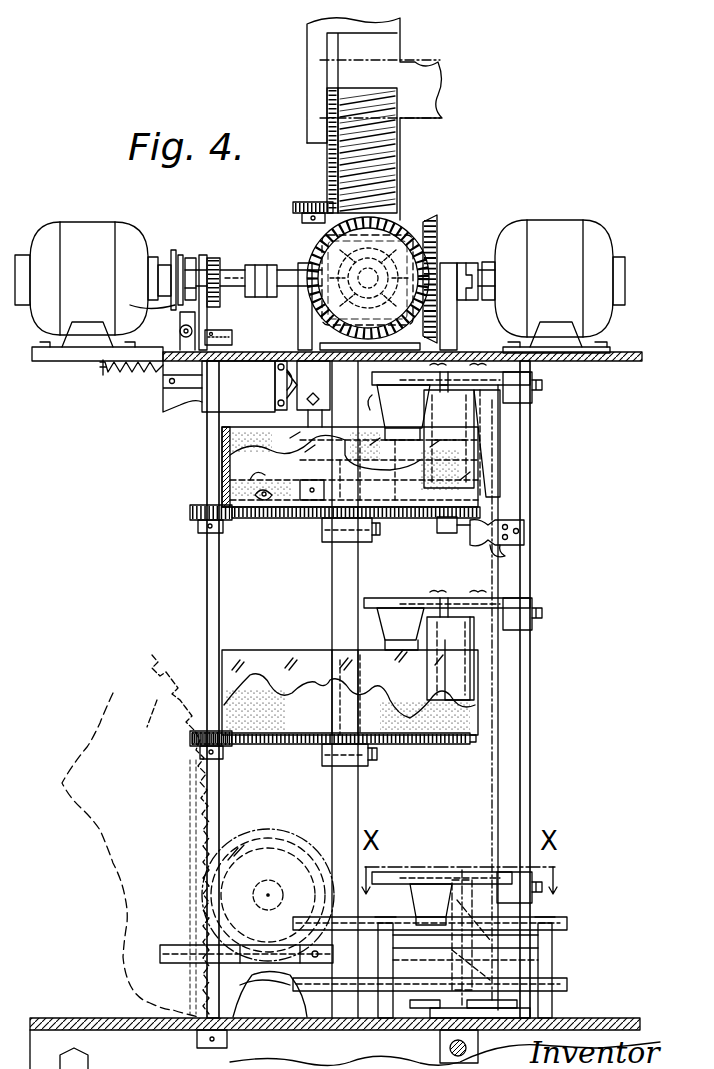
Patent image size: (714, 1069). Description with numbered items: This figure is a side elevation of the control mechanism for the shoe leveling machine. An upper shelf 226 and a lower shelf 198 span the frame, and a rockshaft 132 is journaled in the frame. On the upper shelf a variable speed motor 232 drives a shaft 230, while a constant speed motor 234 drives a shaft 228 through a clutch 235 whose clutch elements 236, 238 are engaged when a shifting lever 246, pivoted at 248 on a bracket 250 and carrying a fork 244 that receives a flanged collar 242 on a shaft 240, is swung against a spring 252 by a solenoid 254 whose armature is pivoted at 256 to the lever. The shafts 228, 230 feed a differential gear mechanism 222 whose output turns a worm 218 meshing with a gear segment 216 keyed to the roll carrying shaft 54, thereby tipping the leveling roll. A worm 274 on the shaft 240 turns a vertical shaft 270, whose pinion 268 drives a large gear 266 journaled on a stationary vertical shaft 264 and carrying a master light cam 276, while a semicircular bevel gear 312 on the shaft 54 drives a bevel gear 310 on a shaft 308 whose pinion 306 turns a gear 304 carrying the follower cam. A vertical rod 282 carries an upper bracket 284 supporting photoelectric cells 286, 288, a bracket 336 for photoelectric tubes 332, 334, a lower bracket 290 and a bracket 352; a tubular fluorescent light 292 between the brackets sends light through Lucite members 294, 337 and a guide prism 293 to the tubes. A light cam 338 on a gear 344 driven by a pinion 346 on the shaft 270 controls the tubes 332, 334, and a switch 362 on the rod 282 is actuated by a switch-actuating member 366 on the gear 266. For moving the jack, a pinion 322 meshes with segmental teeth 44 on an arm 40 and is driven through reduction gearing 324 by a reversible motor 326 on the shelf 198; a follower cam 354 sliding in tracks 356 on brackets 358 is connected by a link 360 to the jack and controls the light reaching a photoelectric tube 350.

The shaft 54 is at (436, 104).
The gear segment 216 is at (400, 144).
The semicircular bevel gear 312 is at (328, 154).
The bevel gear 310 is at (308, 204).
The shaft 308 is at (306, 233).
The differential gear mechanism 222 is at (402, 242).
The shaft 230 is at (452, 268).
The worm 218 is at (440, 320).
The shaft 228 is at (300, 270).
The variable speed motor 232 is at (555, 222).
The constant speed motor 234 is at (74, 232).
The clutch element 236 is at (172, 260).
The clutch element 238 is at (180, 252).
The clutch 235 is at (180, 248).
The bracket 250 is at (222, 262).
The flanged collar 242 is at (212, 258).
The shaft 240 is at (255, 260).
The fork 244 is at (173, 310).
The shifting lever 246 is at (186, 338).
The worm 274 is at (218, 306).
The pivot 248 is at (230, 337).
The bracket 284 is at (462, 366).
The upper shelf 226 is at (582, 365).
The spring 252 is at (160, 392).
The pivot 256 is at (200, 408).
The solenoid 254 is at (218, 412).
The vertical shaft 270 is at (212, 580).
The vertical stationary shaft 264 is at (353, 572).
The vertical rod 282 is at (530, 778).
The tubular fluorescent light 292 is at (500, 757).
The photoelectric cell 286 is at (399, 411).
The photoelectric cell 288 is at (490, 436).
The Lucite member 294 is at (462, 408).
The master light cam 276 is at (225, 465).
The gear 304 is at (252, 520).
The pinion 306 is at (298, 520).
The large gear 266 is at (482, 515).
The pinion 268 is at (205, 520).
The switch-actuating member 366 is at (447, 531).
The switch 362 is at (508, 556).
The bracket 336 is at (440, 583).
The photoelectric tube 334 is at (425, 656).
The Lucite member 337 is at (476, 706).
The light cam 338 is at (252, 650).
The photoelectric tube 332 is at (378, 648).
The gear 344 is at (405, 746).
The pinion 346 is at (200, 712).
The segmental teeth 44 is at (190, 738).
The arm 40 is at (110, 865).
The pinion 322 is at (240, 836).
The reduction gearing 324 is at (285, 828).
The bracket 352 is at (420, 872).
The photoelectric tube 350 is at (430, 915).
The Lucite guide prism 293 is at (456, 880).
The tracks 356 is at (540, 920).
The brackets 358 is at (552, 946).
The follower cam 354 is at (520, 976).
The link 360 is at (180, 945).
The bracket 290 is at (482, 1010).
The reversible motor 326 is at (290, 1015).
The lower horizontal shelf 198 is at (600, 1020).
The rockshaft 132 is at (450, 1050).